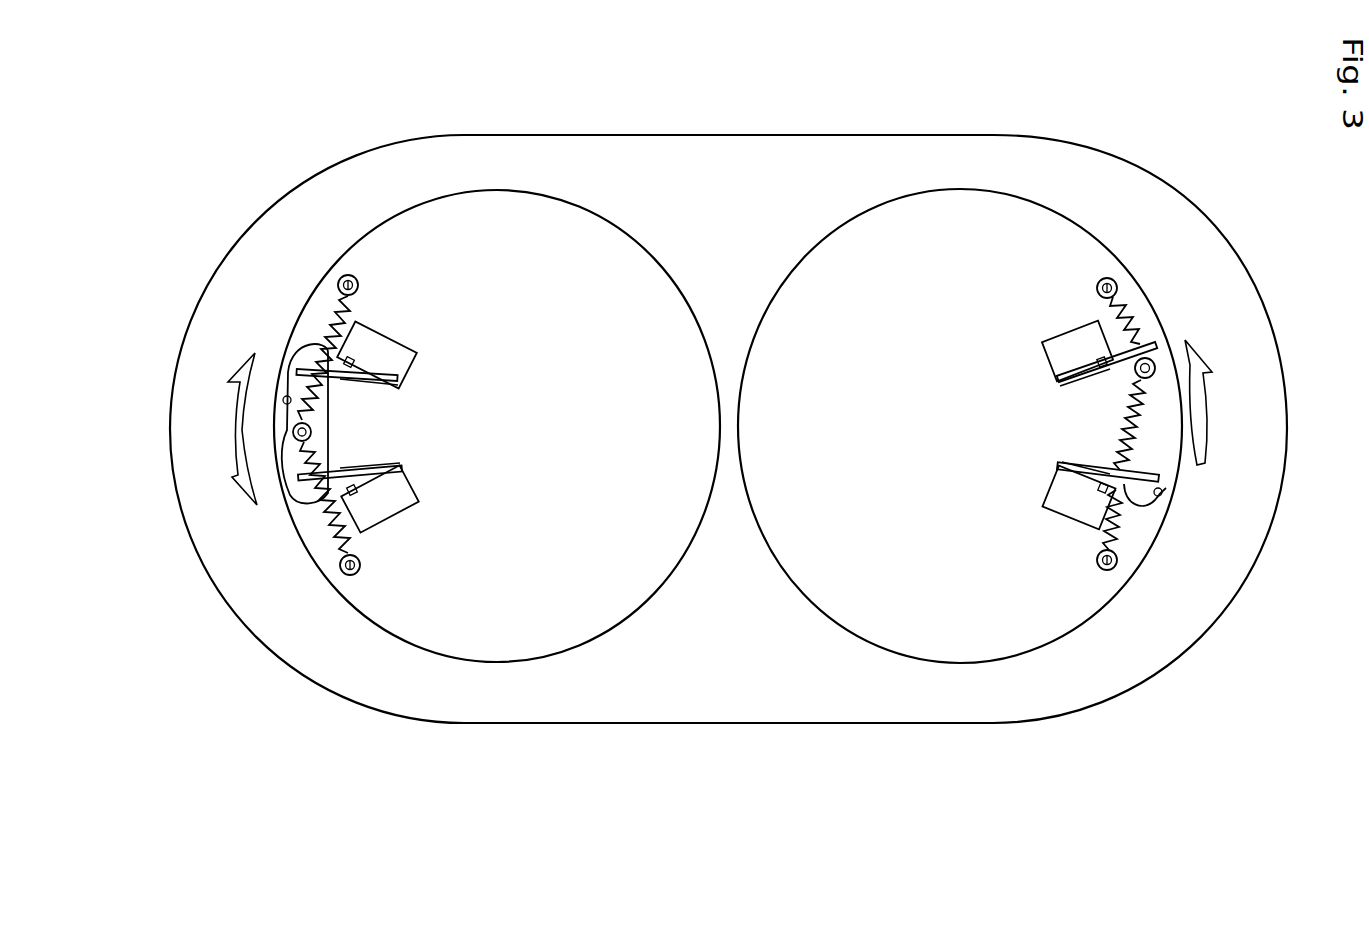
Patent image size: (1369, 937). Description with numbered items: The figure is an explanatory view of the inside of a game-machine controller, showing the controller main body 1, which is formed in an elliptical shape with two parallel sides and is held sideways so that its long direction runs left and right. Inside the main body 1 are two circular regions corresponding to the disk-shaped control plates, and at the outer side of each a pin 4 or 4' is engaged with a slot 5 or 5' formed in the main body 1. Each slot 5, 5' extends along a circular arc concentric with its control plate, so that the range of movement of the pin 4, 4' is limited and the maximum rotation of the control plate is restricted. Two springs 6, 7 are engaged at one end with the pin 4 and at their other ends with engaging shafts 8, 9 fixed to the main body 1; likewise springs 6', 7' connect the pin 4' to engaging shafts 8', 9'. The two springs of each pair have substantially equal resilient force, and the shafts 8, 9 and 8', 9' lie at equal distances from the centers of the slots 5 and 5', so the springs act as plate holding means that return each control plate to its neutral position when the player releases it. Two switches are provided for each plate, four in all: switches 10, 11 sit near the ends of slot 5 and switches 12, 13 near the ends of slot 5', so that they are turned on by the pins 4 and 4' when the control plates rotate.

The controller main body 1 is at (780, 150).
The pin 4 is at (252, 511).
The slot 5 is at (203, 437).
The spring 6 is at (245, 304).
The spring 7 is at (282, 597).
The engaging shaft 8 is at (313, 183).
The engaging shaft 9 is at (327, 676).
The switch 10 is at (382, 345).
The switch 11 is at (383, 510).
The switch 12 is at (1070, 345).
The switch 13 is at (1074, 510).
The pin 4' is at (1185, 298).
The slot 5' is at (1236, 522).
The spring 6' is at (1196, 242).
The spring 7' is at (1197, 540).
The engaging shaft 8' is at (1149, 181).
The engaging shaft 9' is at (1147, 630).